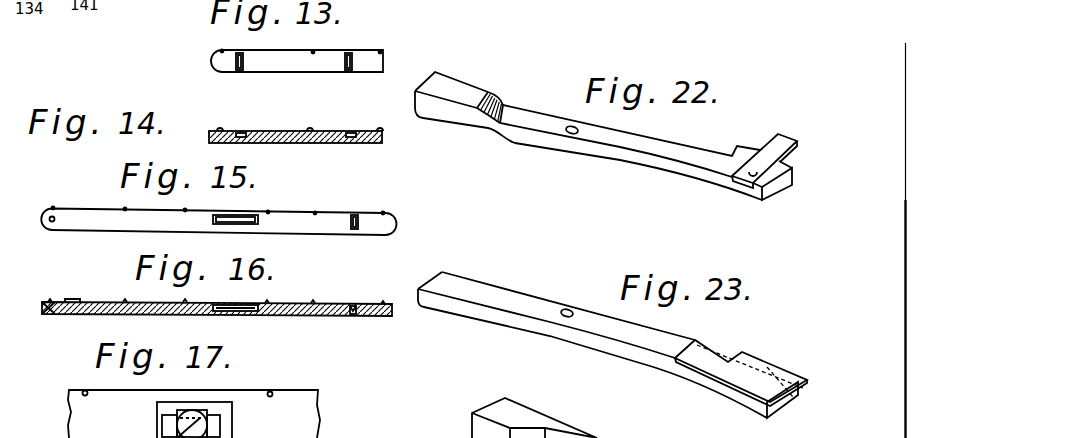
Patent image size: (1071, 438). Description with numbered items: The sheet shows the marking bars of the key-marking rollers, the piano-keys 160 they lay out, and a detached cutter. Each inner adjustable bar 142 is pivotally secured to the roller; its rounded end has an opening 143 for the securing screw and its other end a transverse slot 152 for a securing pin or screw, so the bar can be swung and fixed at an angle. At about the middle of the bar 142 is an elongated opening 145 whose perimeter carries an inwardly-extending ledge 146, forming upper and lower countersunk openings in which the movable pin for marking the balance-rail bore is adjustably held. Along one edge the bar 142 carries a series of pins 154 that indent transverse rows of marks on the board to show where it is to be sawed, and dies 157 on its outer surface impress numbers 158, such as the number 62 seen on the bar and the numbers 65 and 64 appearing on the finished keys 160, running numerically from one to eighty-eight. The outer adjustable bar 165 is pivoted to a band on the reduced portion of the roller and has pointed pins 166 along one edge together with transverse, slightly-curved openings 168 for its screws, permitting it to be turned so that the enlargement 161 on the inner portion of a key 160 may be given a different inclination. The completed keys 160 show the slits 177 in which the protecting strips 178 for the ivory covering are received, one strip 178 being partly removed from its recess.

In FIG. 15, the bar 62 is at (218, 234).
In FIG. 23, the bar 64 is at (592, 342).
In FIG. 22, the bar 65 is at (588, 136).
In FIG. 15, the adjustable bar 142 is at (110, 224).
In FIG. 16, the adjustable bar 142 is at (103, 313).
In FIG. 17, the adjustable bar 142 is at (194, 414).
In FIG. 15, the opening 143 is at (50, 229).
In FIG. 16, the opening 143 is at (53, 315).
In FIG. 15, the elongated opening 145 is at (240, 224).
In FIG. 16, the elongated opening 145 is at (245, 313).
In FIG. 17, the elongated opening 145 is at (233, 410).
In FIG. 17, the ledge 146 is at (220, 428).
In FIG. 15, the transverse slot 152 is at (359, 226).
In FIG. 15, the pins 154 is at (53, 208).
In FIG. 16, the pins 154 is at (125, 302).
In FIG. 17, the pins 154 is at (272, 393).
In FIG. 15, the dies 157 is at (68, 208).
In FIG. 16, the dies 157 is at (65, 305).
In FIG. 22, the numbers 158 is at (668, 148).
In FIG. 23, the numbers 158 is at (648, 355).
In FIG. 22, the keys 160 is at (595, 152).
In FIG. 23, the keys 160 is at (512, 295).
In FIG. 22, the enlargement 161 is at (488, 95).
In FIG. 13, the adjustable bar 165 is at (297, 61).
In FIG. 14, the adjustable bar 165 is at (382, 138).
In FIG. 13, the pointed pins 166 is at (380, 51).
In FIG. 14, the pointed pins 166 is at (380, 131).
In FIG. 13, the transverse openings 168 is at (237, 62).
In FIG. 14, the transverse openings 168 is at (348, 142).
In FIG. 22, the slits 177 is at (743, 179).
In FIG. 22, the strips 178 is at (773, 143).
In FIG. 23, the strips 178 is at (747, 392).